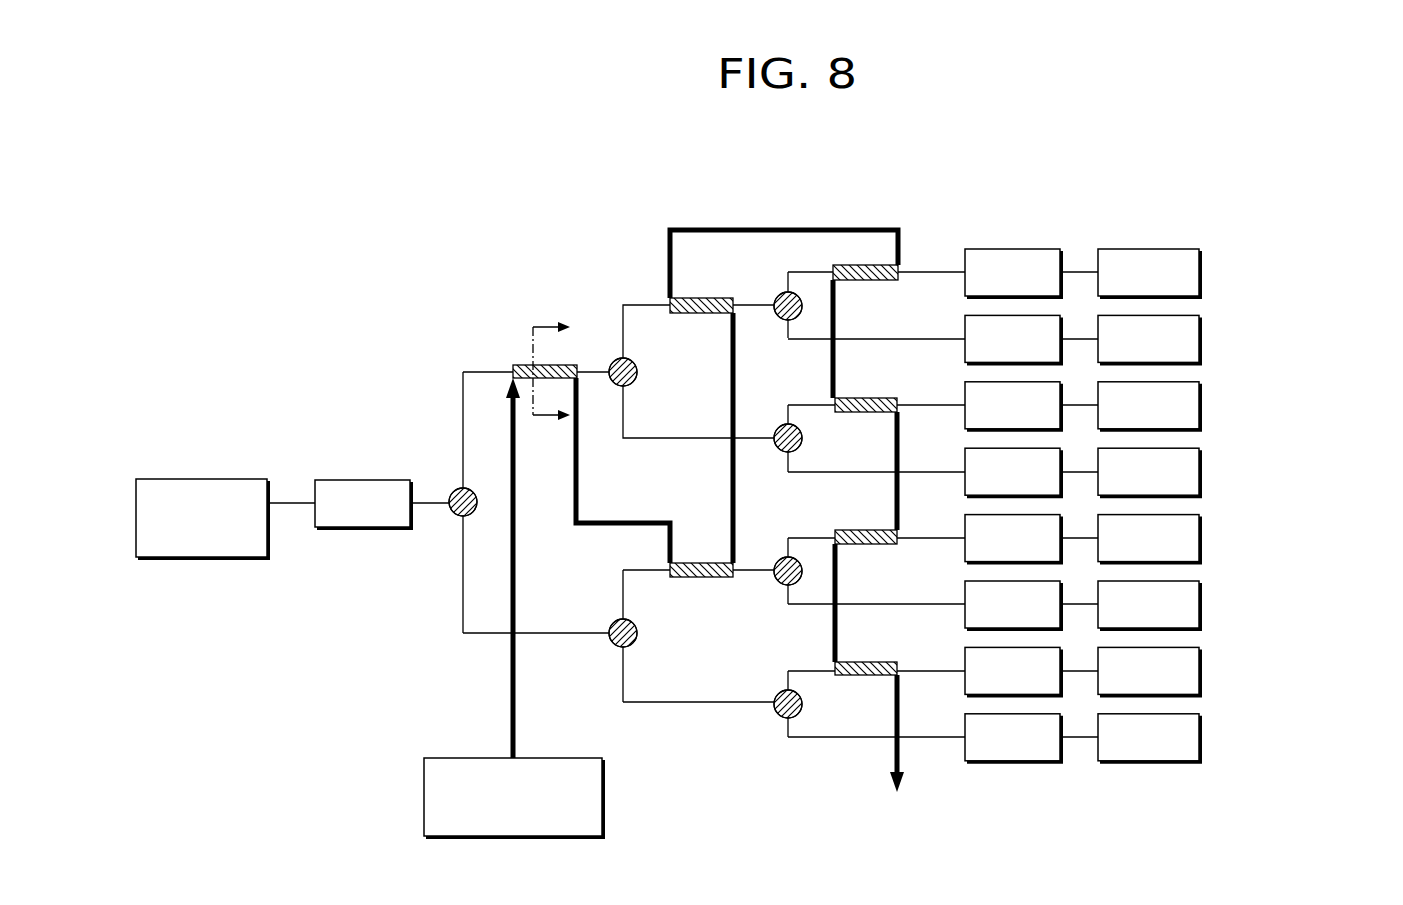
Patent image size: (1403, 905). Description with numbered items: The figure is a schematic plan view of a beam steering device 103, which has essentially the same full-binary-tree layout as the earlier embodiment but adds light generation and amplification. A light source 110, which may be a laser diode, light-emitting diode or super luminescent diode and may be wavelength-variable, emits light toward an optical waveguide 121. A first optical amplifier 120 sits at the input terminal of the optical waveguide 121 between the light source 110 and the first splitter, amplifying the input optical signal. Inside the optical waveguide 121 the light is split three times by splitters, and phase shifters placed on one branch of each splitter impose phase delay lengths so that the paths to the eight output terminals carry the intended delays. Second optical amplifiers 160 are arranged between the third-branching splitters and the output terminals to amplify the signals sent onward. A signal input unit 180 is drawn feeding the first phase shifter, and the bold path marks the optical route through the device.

The beam steering device 103 is at (1280, 230).
The light source 110 is at (203, 479).
The first optical amplifier OA1 120 is at (363, 480).
The optical waveguide 121 is at (645, 305).
The second optical amplifier OA2 160 is at (1012, 249).
The signal input unit 180 is at (538, 757).